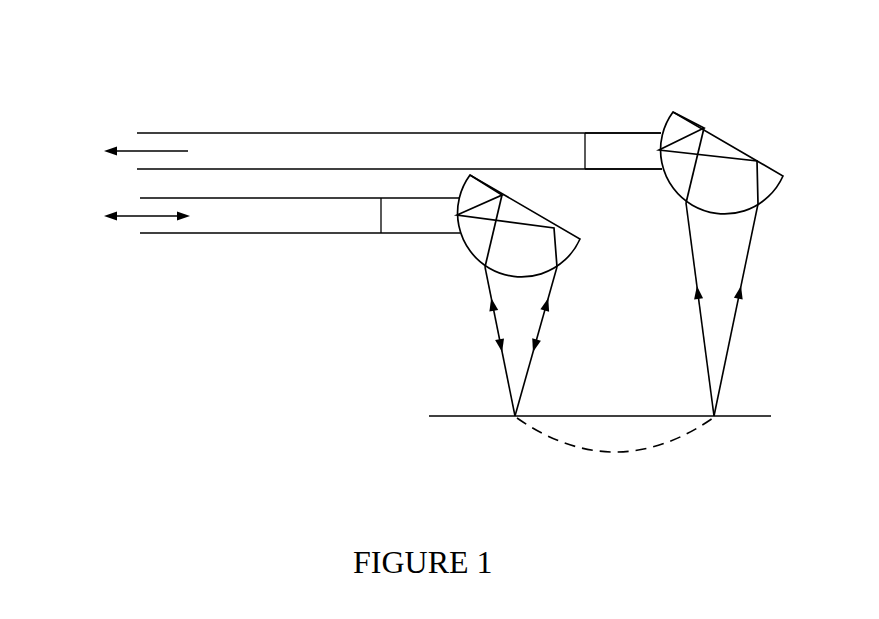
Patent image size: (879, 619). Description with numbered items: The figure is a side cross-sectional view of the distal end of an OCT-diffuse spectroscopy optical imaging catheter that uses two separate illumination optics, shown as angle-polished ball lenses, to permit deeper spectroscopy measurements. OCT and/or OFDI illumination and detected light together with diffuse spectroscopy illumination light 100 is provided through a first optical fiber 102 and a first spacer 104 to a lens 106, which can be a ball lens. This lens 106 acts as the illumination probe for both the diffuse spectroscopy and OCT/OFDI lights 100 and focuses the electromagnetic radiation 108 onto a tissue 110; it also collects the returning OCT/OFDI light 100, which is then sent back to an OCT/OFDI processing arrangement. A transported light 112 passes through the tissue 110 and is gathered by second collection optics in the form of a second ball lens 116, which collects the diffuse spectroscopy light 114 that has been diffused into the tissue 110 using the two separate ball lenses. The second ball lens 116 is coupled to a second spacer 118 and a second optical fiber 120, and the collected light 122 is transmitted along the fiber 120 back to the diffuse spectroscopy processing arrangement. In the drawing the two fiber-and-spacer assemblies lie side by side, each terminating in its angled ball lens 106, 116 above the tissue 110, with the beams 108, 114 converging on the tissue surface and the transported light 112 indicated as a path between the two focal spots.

The OCT/OFDI illumination and detected light/diffuse spectroscopy illumination light 100 is at (128, 223).
The first optical fiber 102 is at (348, 240).
The first spacer 104 is at (452, 240).
The lens 106 is at (568, 231).
The electromagnetic radiation 108 is at (490, 352).
The tissue 110 is at (462, 423).
The transported light 112 is at (598, 450).
The diffuse spectroscopy light 114 is at (697, 325).
The second ball lens 116 is at (727, 137).
The second spacer 118 is at (628, 127).
The second optical fiber 120 is at (492, 132).
The collected light 122 is at (128, 143).